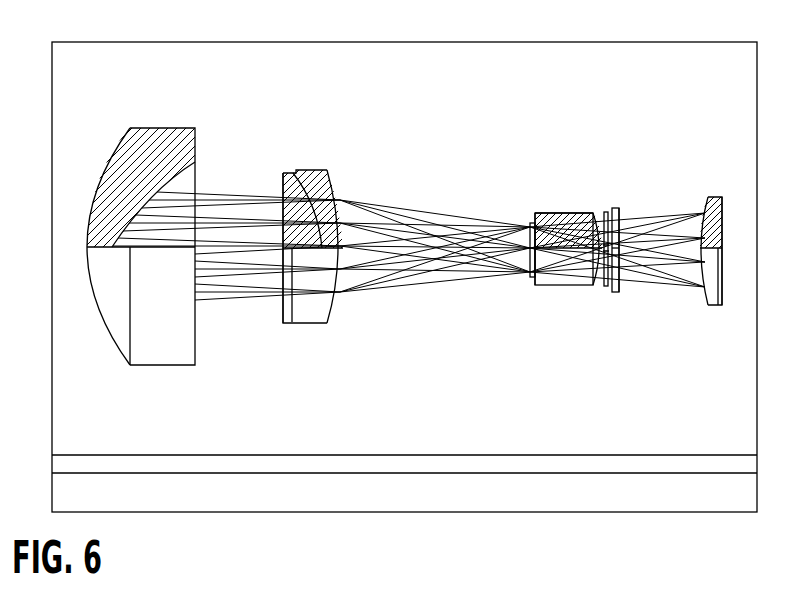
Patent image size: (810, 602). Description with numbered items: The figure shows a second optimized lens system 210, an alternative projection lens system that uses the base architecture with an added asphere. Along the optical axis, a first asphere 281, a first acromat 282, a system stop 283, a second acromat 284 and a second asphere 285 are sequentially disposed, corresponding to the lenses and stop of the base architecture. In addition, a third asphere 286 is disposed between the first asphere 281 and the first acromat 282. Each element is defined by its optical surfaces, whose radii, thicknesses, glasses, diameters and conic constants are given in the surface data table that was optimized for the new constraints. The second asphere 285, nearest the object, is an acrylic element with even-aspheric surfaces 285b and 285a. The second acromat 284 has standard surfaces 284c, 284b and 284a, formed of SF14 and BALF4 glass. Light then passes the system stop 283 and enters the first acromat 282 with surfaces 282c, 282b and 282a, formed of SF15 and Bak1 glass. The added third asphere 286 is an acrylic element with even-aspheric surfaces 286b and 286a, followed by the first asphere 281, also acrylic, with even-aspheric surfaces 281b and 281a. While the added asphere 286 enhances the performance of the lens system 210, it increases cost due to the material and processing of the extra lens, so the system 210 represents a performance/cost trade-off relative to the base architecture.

The second optimized lens system 210 is at (708, 89).
The first asphere 281 is at (709, 268).
The surface of first asphere 281a is at (722, 294).
The surface of first asphere 281b is at (705, 300).
The first acromat 282 is at (544, 265).
The surface of first acromat 282a is at (596, 265).
The surface of first acromat 282b is at (575, 238).
The surface of first acromat 282c is at (522, 280).
The system stop 283 is at (530, 220).
The second acromat 284 is at (323, 224).
The surface of second acromat 284a is at (342, 300).
The surface of second acromat 284b is at (322, 248).
The surface of second acromat 284c is at (280, 230).
The second asphere 285 is at (156, 234).
The surface of second asphere 285a is at (173, 190).
The surface of second asphere 285b is at (105, 342).
The third asphere 286 is at (619, 266).
The surface of third asphere 286a is at (623, 288).
The surface of third asphere 286b is at (603, 288).